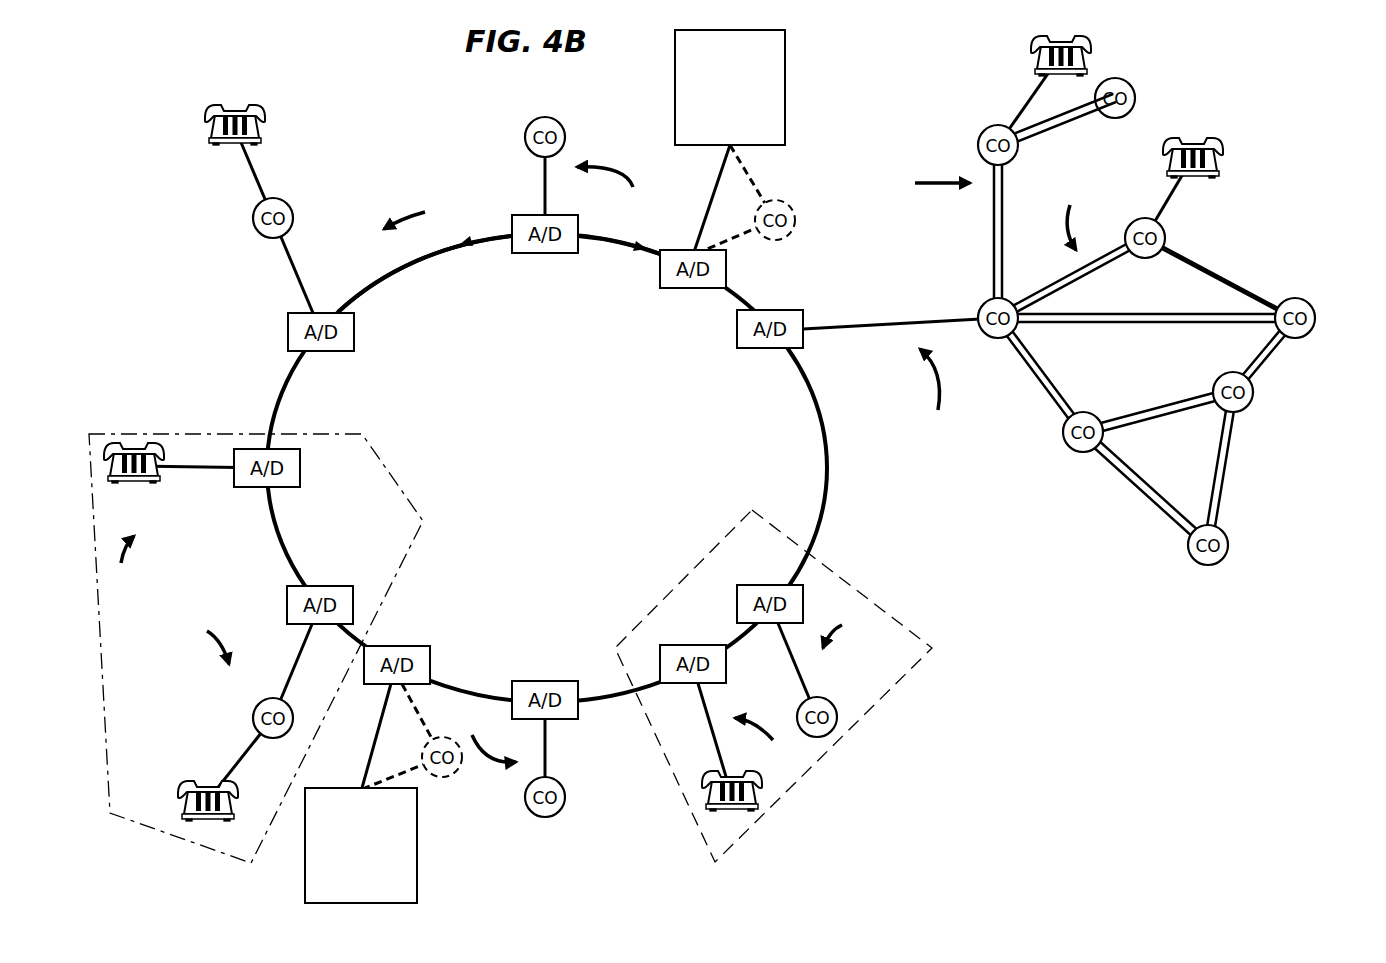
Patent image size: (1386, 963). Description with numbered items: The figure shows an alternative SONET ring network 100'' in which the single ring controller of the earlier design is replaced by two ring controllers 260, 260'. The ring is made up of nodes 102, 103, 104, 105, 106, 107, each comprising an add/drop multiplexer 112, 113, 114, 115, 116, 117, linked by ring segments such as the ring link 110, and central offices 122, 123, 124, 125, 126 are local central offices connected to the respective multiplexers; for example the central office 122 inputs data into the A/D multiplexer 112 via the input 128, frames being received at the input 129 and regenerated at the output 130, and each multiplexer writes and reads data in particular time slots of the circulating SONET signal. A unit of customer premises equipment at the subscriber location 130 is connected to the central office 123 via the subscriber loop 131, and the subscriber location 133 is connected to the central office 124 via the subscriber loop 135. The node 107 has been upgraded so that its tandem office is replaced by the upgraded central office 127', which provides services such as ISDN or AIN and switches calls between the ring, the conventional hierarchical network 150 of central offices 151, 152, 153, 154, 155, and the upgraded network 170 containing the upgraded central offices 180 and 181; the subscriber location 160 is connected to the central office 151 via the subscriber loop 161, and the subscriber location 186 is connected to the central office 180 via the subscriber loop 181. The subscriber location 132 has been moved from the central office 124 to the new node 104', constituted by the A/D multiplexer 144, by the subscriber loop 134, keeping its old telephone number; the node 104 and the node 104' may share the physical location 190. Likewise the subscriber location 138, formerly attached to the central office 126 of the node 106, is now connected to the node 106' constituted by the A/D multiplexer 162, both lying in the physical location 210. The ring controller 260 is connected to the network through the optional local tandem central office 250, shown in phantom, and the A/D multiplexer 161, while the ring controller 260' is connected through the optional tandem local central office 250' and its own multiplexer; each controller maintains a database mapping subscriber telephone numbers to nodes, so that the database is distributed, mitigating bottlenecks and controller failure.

The SONET ring network 100'' is at (471, 468).
The node 102 is at (616, 190).
The node 103 is at (423, 213).
The node 104 is at (198, 639).
The node 104' is at (123, 563).
The node 105 is at (479, 734).
The node 106 is at (853, 626).
The node 106' is at (767, 743).
The node 107 is at (928, 394).
The ring link 110 is at (382, 283).
The add/drop multiplexer 112 is at (552, 253).
The add/drop multiplexer 113 is at (322, 352).
The add/drop multiplexer 114 is at (335, 587).
The add/drop multiplexer 115 is at (557, 680).
The add/drop multiplexer 116 is at (767, 585).
The add/drop multiplexer 117 is at (745, 348).
The central office 122 is at (565, 132).
The central office 123 is at (293, 212).
The central office 124 is at (280, 698).
The central office 125 is at (565, 790).
The central office 126 is at (830, 700).
The upgraded central office 127' is at (971, 292).
The input 128 is at (548, 215).
The input 129 is at (578, 250).
The subscriber location 130 is at (255, 108).
The subscriber loop 131 is at (256, 175).
The subscriber location 132 is at (134, 482).
The subscriber location 133 is at (186, 782).
The subscriber loop 134 is at (200, 466).
The subscriber loop 135 is at (258, 735).
The subscriber location 138 is at (710, 780).
The A/D multiplexer 144 is at (300, 475).
The hierarchical network 150 is at (1073, 214).
The central office 151 is at (1140, 218).
The central office 152 is at (1310, 305).
The central office 153 is at (1253, 393).
The central office 154 is at (1228, 545).
The central office 155 is at (1093, 413).
The subscriber location 160 is at (1212, 138).
The A/D multiplexer unit 161 is at (1178, 210).
The A/D multiplexer 162 is at (705, 645).
The upgraded network 170 is at (923, 183).
The upgraded central office 180 is at (985, 132).
The upgraded central office 181 is at (1020, 110).
The subscriber location 186 is at (1093, 48).
The physical location 190 is at (98, 760).
The physical location 210 is at (863, 713).
The local tandem central office 250 is at (457, 793).
The tandem local central office 250' is at (799, 199).
The ring controller 260 is at (408, 845).
The ring controller 260' is at (762, 87).